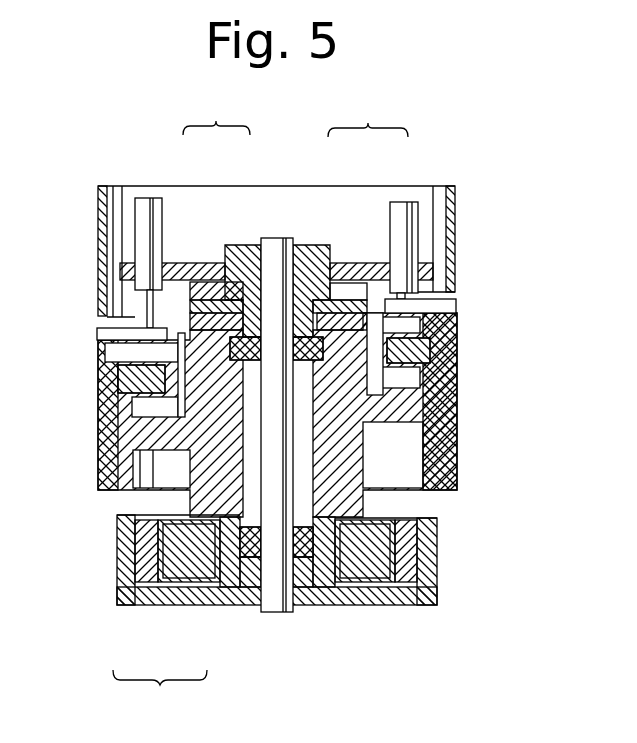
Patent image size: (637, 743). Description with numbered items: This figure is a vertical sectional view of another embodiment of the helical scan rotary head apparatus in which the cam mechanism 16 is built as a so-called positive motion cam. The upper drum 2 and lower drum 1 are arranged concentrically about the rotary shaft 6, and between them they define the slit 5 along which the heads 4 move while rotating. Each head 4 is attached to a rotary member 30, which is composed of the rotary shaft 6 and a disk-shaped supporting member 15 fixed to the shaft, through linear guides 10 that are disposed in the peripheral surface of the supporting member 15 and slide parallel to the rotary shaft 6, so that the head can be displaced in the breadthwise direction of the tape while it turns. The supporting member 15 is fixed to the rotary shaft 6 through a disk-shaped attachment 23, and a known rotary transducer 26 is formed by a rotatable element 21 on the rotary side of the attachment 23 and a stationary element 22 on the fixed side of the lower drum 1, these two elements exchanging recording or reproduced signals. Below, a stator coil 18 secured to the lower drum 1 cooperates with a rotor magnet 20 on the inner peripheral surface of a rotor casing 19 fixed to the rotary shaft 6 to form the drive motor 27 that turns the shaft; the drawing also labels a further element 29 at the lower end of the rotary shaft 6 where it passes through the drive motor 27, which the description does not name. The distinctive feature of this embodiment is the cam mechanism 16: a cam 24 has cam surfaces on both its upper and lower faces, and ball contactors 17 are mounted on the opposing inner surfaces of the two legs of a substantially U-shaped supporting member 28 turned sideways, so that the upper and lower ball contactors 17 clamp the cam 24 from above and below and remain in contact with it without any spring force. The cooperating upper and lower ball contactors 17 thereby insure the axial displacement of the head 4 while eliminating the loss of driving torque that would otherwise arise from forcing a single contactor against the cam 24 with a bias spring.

The lower drum 1 is at (447, 480).
The upper drum 2 is at (456, 212).
The head 4 is at (457, 306).
The slit 5 is at (97, 326).
The rotary shaft 6 is at (288, 238).
The linear guide 10 is at (148, 198).
The supporting member 15 is at (366, 263).
The cam mechanism 16 is at (415, 350).
The ball contactor 17 is at (135, 356).
The stator coil 18 is at (185, 580).
The rotor casing 19 is at (322, 600).
The rotor magnet 20 is at (138, 605).
The rotatable element 21 is at (200, 263).
The stationary element 22 is at (217, 263).
The attachment 23 is at (243, 246).
The cam 24 is at (120, 378).
The rotary transducer 26 is at (216, 113).
The drive motor 27 is at (160, 693).
The U-shaped supporting member 28 is at (130, 355).
The lower seals 29 is at (288, 612).
The rotary member 30 is at (390, 117).